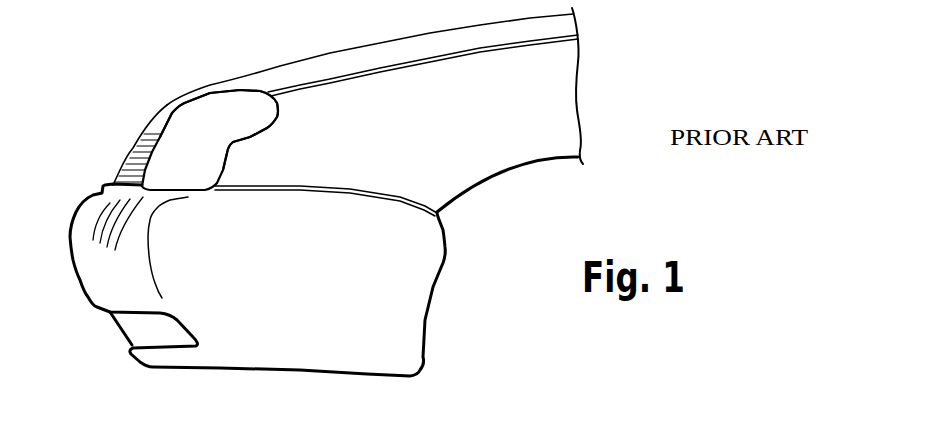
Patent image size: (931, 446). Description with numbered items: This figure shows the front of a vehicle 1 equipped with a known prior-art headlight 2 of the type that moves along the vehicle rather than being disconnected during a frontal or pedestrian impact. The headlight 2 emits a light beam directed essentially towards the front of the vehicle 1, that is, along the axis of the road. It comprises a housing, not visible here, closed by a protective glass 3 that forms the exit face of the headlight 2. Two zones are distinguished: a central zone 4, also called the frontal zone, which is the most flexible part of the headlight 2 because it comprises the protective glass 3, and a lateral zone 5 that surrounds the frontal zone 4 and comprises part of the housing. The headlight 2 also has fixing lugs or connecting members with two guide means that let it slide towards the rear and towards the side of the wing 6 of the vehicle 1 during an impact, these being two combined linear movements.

The vehicle 1 is at (452, 300).
The headlight 2 is at (230, 162).
The protective glass 3 is at (253, 107).
The central zone 4 is at (203, 133).
The lateral zone 5 is at (158, 170).
The wing 6 is at (488, 143).